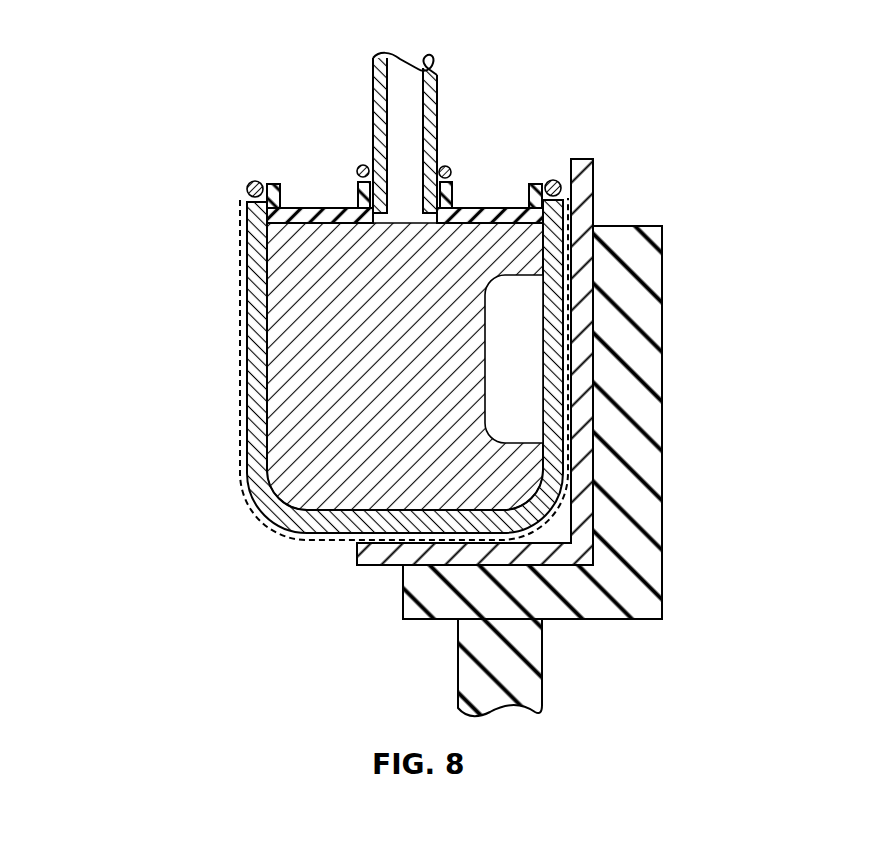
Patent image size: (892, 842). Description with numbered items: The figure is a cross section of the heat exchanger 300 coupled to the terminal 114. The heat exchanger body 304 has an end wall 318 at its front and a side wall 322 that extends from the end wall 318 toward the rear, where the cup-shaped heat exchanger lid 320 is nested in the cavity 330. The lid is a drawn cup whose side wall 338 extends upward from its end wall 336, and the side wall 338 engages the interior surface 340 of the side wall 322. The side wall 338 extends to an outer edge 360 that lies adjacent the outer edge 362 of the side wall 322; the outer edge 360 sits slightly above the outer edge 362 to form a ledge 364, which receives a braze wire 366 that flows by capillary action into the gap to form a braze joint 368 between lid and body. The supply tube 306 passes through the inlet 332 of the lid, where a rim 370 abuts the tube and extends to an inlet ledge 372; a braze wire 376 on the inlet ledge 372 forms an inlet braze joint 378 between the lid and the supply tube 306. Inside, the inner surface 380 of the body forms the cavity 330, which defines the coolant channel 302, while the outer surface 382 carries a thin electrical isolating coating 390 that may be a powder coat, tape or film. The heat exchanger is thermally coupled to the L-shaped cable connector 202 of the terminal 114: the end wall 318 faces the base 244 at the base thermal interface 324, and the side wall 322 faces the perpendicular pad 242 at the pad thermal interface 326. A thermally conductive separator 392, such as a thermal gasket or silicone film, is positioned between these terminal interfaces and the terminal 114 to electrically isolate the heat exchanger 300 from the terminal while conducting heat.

The terminal 114 is at (588, 449).
The cable connector 202 is at (571, 471).
The pad 242 is at (588, 449).
The base 244 is at (418, 613).
The heat exchanger 300 is at (450, 365).
The coolant channel 302 is at (520, 300).
The heat exchanger body 304 is at (443, 369).
The supply tube 306 is at (437, 78).
The end wall 318 is at (444, 369).
The heat exchanger lid 320 is at (405, 145).
The side wall 322 is at (352, 398).
The base thermal interface 324 is at (398, 545).
The pad thermal interface 326 is at (516, 399).
The cavity 330 is at (349, 366).
The inlet 332 is at (395, 232).
The end wall 336 is at (405, 145).
The side wall 338 is at (293, 196).
The interior surface 340 is at (543, 425).
The outer edge 360 is at (444, 339).
The outer edge 362 is at (263, 151).
The ledge 364 is at (248, 176).
The braze wire 366 is at (444, 339).
The braze joint 368 is at (554, 175).
The rim 370 is at (455, 200).
The inlet ledge 372 is at (455, 182).
The braze wire 376 is at (450, 168).
The inlet braze joint 378 is at (362, 160).
The inner surface 380 is at (444, 349).
The outer surface 382 is at (443, 369).
The electrical isolating coating 390 is at (257, 518).
The thermally conductive separator 392 is at (603, 590).